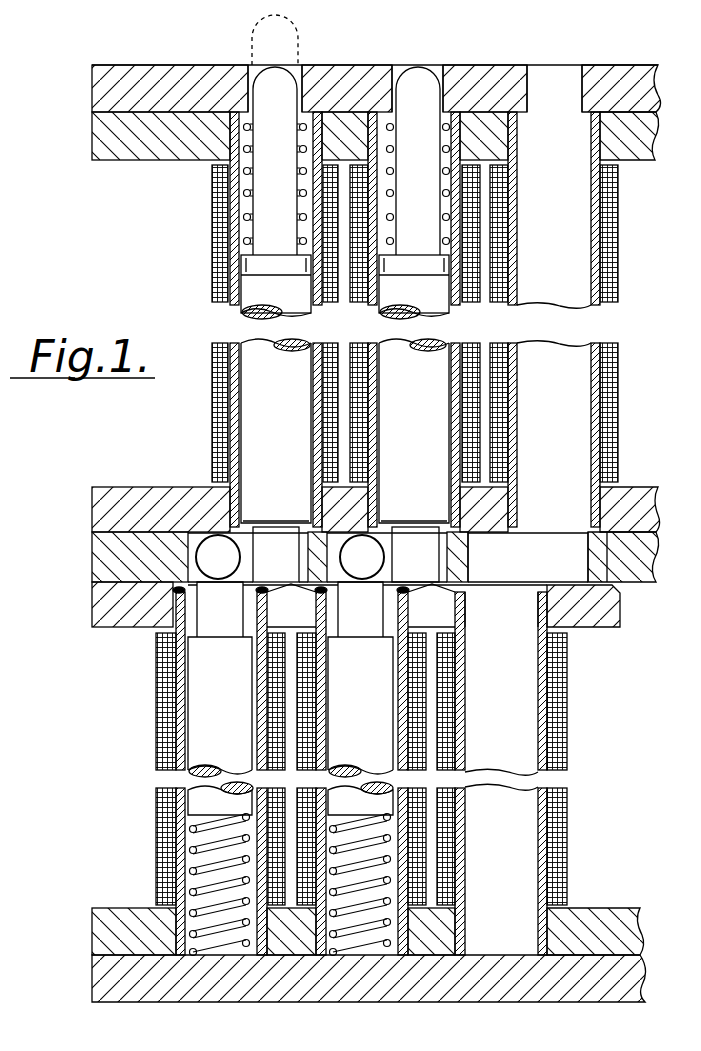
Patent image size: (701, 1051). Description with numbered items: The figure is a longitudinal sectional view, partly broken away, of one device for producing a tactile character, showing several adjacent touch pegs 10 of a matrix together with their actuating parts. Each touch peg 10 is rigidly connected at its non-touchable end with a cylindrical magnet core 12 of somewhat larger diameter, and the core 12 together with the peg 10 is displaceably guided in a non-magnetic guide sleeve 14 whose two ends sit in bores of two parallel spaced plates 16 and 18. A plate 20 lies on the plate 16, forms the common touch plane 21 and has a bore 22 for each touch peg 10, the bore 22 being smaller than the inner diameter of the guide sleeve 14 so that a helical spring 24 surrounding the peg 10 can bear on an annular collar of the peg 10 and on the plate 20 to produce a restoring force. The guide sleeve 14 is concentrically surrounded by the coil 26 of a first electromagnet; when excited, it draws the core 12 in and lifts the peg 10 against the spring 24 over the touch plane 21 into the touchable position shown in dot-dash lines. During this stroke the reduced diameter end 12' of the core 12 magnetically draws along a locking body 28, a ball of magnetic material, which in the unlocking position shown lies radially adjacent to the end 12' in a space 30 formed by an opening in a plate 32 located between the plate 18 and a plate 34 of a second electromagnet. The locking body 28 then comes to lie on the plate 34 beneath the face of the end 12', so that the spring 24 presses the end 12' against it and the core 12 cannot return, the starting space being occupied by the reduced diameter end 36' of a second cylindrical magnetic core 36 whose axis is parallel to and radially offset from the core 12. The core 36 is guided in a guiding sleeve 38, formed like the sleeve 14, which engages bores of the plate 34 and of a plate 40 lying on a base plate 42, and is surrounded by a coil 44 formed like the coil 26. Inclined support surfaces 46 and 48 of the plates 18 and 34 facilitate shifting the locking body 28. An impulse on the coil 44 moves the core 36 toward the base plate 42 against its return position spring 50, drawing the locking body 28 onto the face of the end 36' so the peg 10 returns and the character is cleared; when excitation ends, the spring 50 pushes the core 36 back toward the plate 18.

The touch peg 10 is at (272, 92).
The magnet core 12 is at (341, 407).
The reduced diameter end 12' is at (345, 504).
The guide sleeve 14 is at (236, 200).
The plate 16 is at (105, 135).
The plate 18 is at (100, 507).
The plate 20 is at (100, 88).
The touch plane 21 is at (172, 65).
The bore 22 is at (297, 70).
The helical spring 24 is at (378, 108).
The coil 26 is at (222, 238).
The locking body 28 is at (212, 552).
The space 30 is at (448, 558).
The plate 32 is at (100, 550).
The plate 34 is at (100, 600).
The magnetic core 36 is at (289, 726).
The reduced diameter end 36' is at (293, 633).
The guiding sleeve 38 is at (180, 720).
The plate 40 is at (118, 910).
The base plate 42 is at (147, 985).
The coil 44 is at (160, 805).
The inclined support surface 46 is at (250, 530).
The inclined support surface 48 is at (178, 592).
The return position spring 50 is at (195, 845).